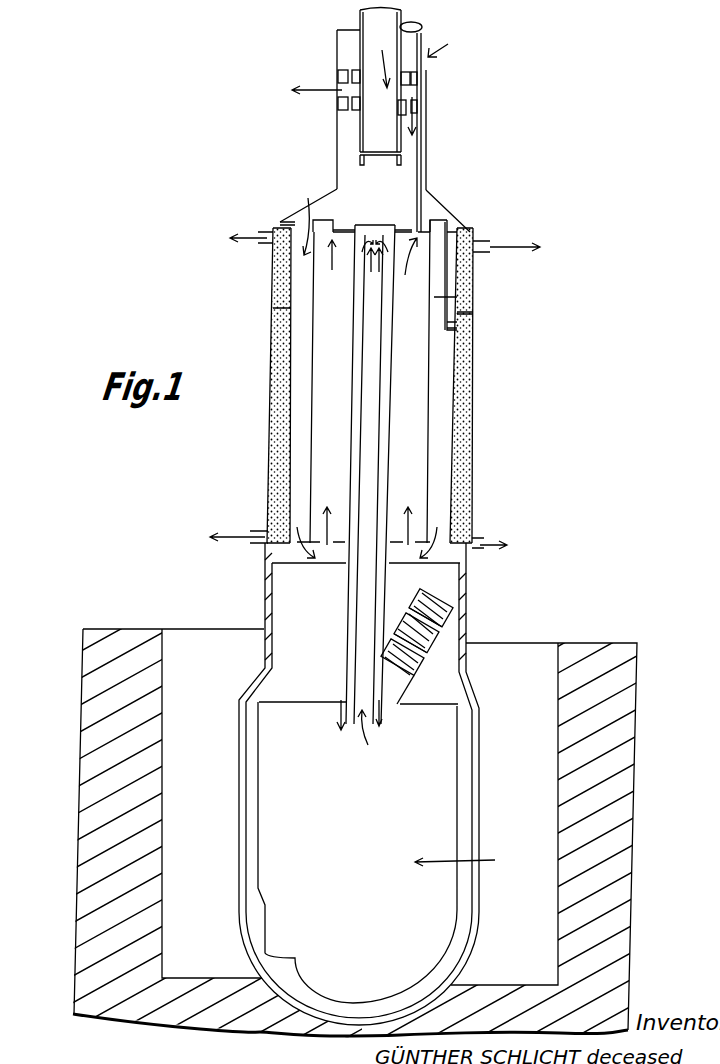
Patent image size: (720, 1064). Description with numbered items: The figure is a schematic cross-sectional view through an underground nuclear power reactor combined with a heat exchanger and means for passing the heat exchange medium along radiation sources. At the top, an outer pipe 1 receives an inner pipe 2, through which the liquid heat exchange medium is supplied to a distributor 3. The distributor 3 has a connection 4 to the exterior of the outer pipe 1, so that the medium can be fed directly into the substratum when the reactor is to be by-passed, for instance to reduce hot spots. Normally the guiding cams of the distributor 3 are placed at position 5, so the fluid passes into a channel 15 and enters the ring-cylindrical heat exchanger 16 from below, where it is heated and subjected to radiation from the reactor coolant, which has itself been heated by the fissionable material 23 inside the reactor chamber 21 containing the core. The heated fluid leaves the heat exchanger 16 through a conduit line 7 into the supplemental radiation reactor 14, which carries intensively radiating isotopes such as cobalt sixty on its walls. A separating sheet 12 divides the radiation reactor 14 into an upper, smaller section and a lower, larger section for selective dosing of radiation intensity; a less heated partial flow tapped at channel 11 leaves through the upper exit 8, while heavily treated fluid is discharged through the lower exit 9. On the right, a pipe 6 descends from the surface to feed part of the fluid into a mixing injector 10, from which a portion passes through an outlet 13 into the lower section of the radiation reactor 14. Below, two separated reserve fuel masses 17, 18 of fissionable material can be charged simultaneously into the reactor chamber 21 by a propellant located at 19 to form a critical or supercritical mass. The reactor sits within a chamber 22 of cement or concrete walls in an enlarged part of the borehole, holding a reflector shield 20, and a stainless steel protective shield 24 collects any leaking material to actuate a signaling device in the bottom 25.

The outer pipe 1 is at (337, 142).
The inner pipe 2 is at (370, 63).
The distributor 3 is at (342, 77).
The connection 4 is at (320, 90).
The position of guiding cams 5 is at (419, 119).
The pipe 6 is at (423, 138).
The conduit line 7 is at (280, 224).
The exit 8 is at (505, 247).
The exit 9 is at (230, 537).
The mixing injector 10 is at (440, 215).
The channel 11 is at (452, 298).
The separating sheet 12 is at (473, 313).
The outlet 13 is at (452, 327).
The supplemental radiation reactor 14 is at (473, 383).
The channel 15 is at (440, 430).
The heat exchanger 16 is at (415, 482).
The reserve fuel mass 17 is at (440, 623).
The reserve fuel mass 18 is at (415, 660).
The propellant 19 is at (455, 607).
The reflector shield 20 is at (172, 645).
The reactor chamber 21 is at (313, 718).
The chamber 22 is at (618, 810).
The fissionable material 23 is at (468, 862).
The protective shield 24 is at (265, 597).
The bottom 25 is at (275, 1034).